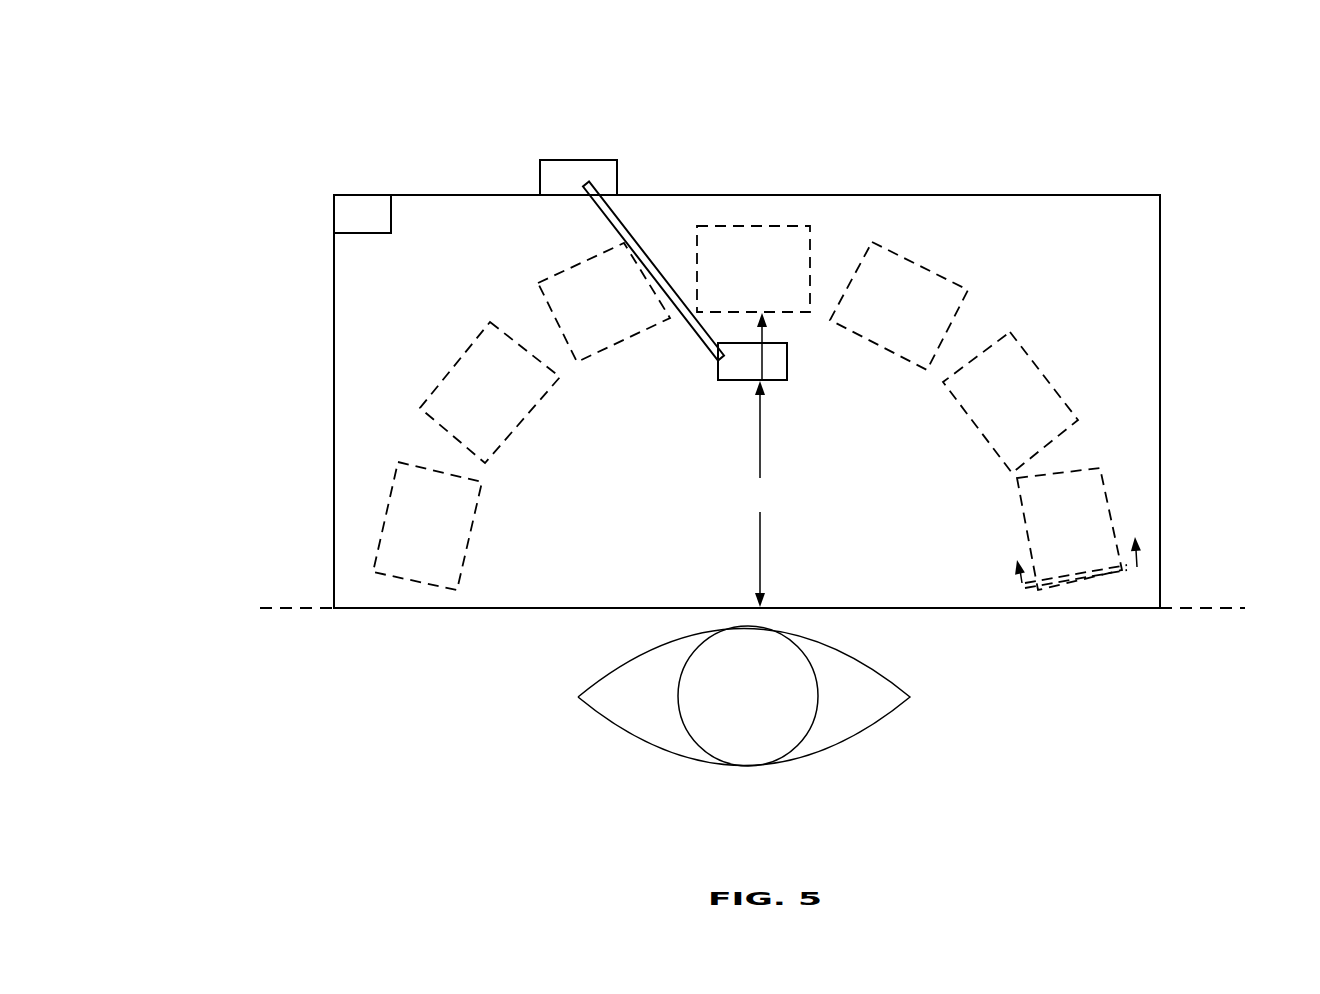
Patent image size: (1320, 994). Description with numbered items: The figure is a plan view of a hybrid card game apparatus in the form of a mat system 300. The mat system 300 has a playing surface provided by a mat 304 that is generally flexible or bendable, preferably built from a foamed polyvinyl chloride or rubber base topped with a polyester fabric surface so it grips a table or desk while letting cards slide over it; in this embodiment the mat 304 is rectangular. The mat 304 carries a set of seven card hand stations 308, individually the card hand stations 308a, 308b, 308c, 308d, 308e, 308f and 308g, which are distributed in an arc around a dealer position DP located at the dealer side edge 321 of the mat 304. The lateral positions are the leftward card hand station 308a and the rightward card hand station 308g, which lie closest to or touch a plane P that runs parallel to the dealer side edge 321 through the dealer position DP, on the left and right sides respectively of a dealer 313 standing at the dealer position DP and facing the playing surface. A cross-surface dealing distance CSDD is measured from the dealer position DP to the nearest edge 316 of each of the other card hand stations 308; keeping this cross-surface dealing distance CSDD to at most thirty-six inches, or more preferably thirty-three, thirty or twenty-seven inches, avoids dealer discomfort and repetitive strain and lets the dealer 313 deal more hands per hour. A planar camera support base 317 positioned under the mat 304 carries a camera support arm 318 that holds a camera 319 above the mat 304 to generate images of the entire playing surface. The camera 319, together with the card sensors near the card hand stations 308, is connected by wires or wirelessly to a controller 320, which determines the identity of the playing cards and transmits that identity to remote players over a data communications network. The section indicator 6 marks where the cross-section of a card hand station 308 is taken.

The mat system 300 is at (392, 148).
The mat 304 is at (848, 210).
The card hand stations 308 is at (701, 315).
The leftward card hand station 308a is at (385, 503).
The card hand station 308b is at (440, 382).
The card hand station 308c is at (570, 267).
The card hand station 308d is at (784, 232).
The card hand station 308e is at (918, 266).
The card hand station 308f is at (1030, 353).
The rightward card hand station 308g is at (1107, 488).
The dealer 313 is at (835, 733).
The nearest edge 316 is at (478, 563).
The planar camera support base 317 is at (598, 160).
The camera support arm 318 is at (627, 230).
The camera 319 is at (768, 374).
The controller 320 is at (372, 213).
The dealer side edge 321 is at (373, 610).
The section line 6- 6 is at (1074, 548).
The cross-surface dealing distance CSDD is at (768, 494).
The dealer position DP is at (762, 612).
The plane P is at (1195, 610).